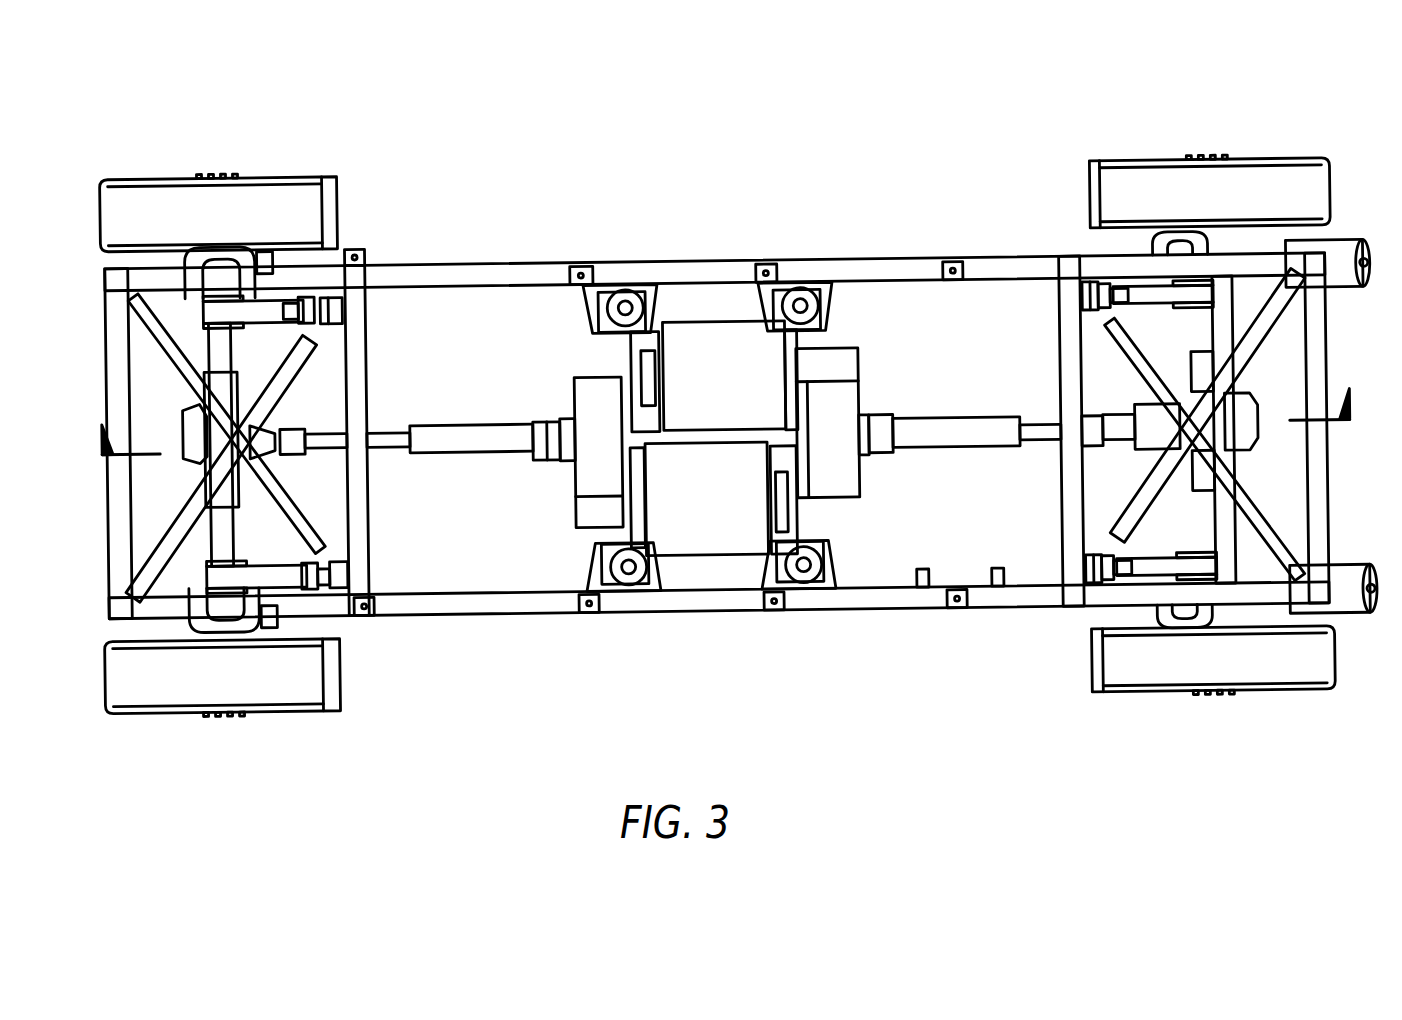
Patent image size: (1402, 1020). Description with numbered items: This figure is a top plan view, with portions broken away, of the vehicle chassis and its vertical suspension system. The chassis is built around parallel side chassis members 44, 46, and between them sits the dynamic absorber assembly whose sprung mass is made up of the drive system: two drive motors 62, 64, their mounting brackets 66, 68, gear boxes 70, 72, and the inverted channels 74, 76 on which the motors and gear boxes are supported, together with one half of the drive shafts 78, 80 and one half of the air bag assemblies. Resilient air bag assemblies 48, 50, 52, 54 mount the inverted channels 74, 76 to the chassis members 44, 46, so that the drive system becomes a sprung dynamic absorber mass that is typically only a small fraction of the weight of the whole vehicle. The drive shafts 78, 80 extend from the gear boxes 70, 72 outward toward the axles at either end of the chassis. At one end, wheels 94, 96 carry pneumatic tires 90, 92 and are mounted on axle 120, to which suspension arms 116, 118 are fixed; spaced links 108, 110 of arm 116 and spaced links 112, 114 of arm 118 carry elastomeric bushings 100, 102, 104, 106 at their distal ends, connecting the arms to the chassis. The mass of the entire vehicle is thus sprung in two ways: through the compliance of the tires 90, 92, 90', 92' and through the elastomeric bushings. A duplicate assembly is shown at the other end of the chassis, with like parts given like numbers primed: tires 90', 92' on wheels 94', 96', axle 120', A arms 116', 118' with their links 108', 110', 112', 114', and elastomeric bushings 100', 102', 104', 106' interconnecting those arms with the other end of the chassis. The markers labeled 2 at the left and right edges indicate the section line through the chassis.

The section line 2- 2 is at (724, 411).
The frame side rail 44 is at (713, 263).
The chassis member 46 is at (690, 604).
The air bag assembly 48 is at (625, 280).
The air bag assembly 50 is at (795, 280).
The air bag assembly 52 is at (625, 598).
The air bag assembly 54 is at (805, 598).
The drive motor 62 is at (723, 356).
The drive motor 64 is at (720, 474).
The mounting bracket 66 is at (637, 352).
The mounting bracket 68 is at (795, 521).
The gear box 70 is at (590, 475).
The gear box 72 is at (858, 388).
The inverted channel 74 is at (617, 363).
The inverted channel 76 is at (840, 345).
The drive shaft 78 is at (493, 448).
The drive shaft 80 is at (950, 433).
The tire 90 is at (219, 190).
The tire 92 is at (223, 700).
The wheel 94 is at (187, 131).
The wheel 96 is at (189, 755).
The elastomeric bushing 100 is at (379, 273).
The elastomeric bushing 102 is at (341, 254).
The elastomeric bushing 104 is at (381, 617).
The elastomeric bushing 106 is at (360, 641).
The spaced link 108 is at (255, 232).
The spaced link 110 is at (334, 230).
The spaced link 112 is at (278, 675).
The spaced link 114 is at (340, 661).
The suspension arm 116 is at (196, 260).
The suspension arm 118 is at (215, 636).
The axle 120 is at (224, 446).
The tire 90' is at (1209, 170).
The tire 92' is at (1214, 687).
The wheel 94' is at (1260, 116).
The wheel 96' is at (1239, 751).
The elastomeric bushing 100' is at (1019, 259).
The elastomeric bushing 102' is at (1041, 238).
The elastomeric bushing 104' is at (1037, 603).
The elastomeric bushing 106' is at (1054, 621).
The spaced link 108' is at (1134, 201).
The spaced link 110' is at (1070, 213).
The spaced link 112' is at (1124, 653).
The spaced link 114' is at (1069, 641).
The A arm 116' is at (1230, 238).
The A arm 118' is at (1232, 616).
The axle 120' is at (1208, 405).